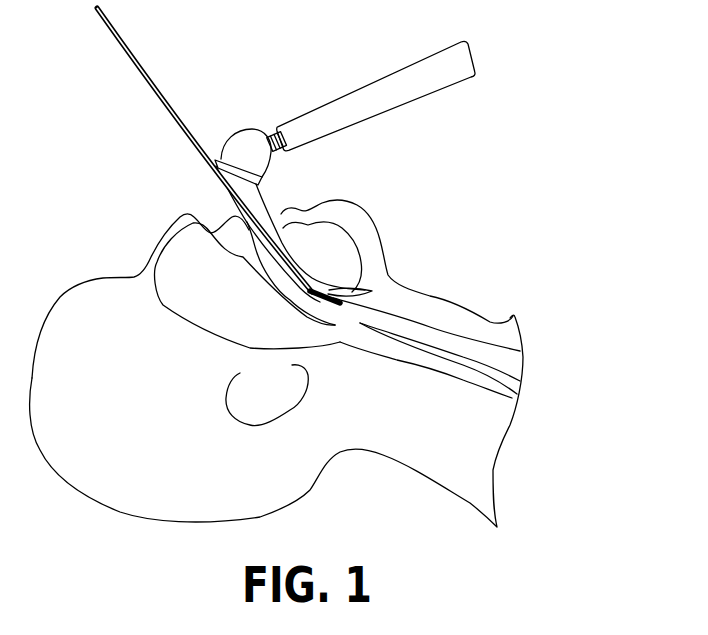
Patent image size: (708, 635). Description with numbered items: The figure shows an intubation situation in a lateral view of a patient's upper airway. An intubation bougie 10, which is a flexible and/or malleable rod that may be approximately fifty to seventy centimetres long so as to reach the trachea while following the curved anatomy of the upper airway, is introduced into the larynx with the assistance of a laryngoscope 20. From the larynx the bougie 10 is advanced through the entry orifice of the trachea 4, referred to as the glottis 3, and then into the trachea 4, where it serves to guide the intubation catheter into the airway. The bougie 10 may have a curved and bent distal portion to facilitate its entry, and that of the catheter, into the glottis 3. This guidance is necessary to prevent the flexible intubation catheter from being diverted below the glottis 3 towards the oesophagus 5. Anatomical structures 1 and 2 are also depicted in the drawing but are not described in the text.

The soft palate / uvula 1 is at (333, 252).
The epiglottis 2 is at (360, 295).
The glottis 3 is at (350, 322).
The trachea 4 is at (508, 360).
The oesophagus 5 is at (502, 388).
The intubation bougie 10 is at (112, 23).
The laryngoscope 20 is at (312, 123).